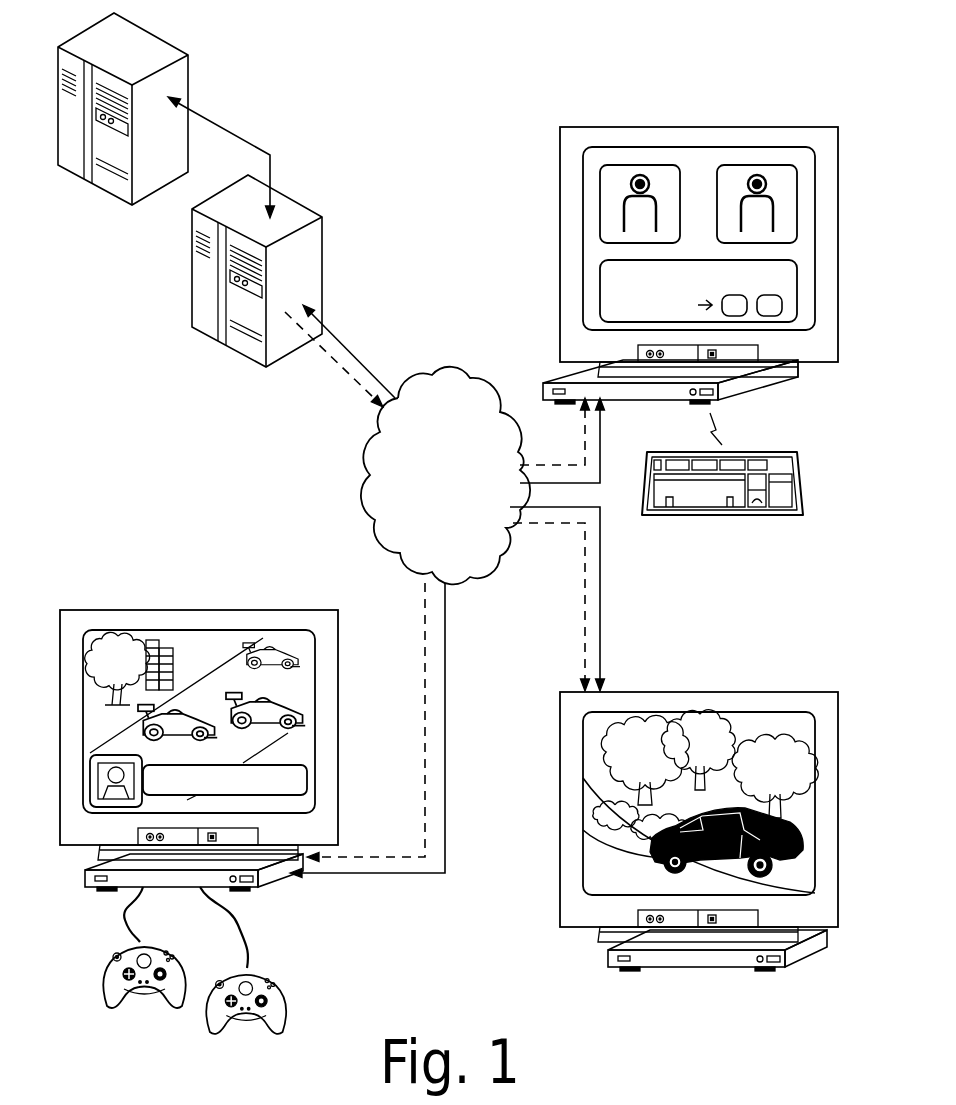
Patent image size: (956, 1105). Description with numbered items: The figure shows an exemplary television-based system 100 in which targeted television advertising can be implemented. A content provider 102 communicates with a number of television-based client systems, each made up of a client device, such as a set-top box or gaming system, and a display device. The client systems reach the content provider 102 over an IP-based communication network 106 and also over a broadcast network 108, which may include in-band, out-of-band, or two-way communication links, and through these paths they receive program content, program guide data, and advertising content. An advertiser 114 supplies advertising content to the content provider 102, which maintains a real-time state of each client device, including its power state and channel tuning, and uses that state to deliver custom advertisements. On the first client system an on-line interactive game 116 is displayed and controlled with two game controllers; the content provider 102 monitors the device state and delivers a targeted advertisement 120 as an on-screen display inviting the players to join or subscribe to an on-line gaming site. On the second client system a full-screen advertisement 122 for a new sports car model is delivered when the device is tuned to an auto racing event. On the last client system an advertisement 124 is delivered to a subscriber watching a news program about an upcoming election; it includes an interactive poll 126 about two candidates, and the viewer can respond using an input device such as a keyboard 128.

The television-based system 100 is at (397, 82).
The content provider 102 is at (224, 297).
The communication network 106 is at (325, 333).
The broadcast network 108 is at (350, 377).
The advertiser 114 is at (123, 138).
The on-line interactive game 116 is at (220, 657).
The targeted advertisement 120 is at (293, 763).
The full-screen advertisement 122 is at (735, 725).
The advertisement 124 is at (697, 165).
The interactive poll 126 is at (600, 278).
The keyboard 128 is at (737, 452).